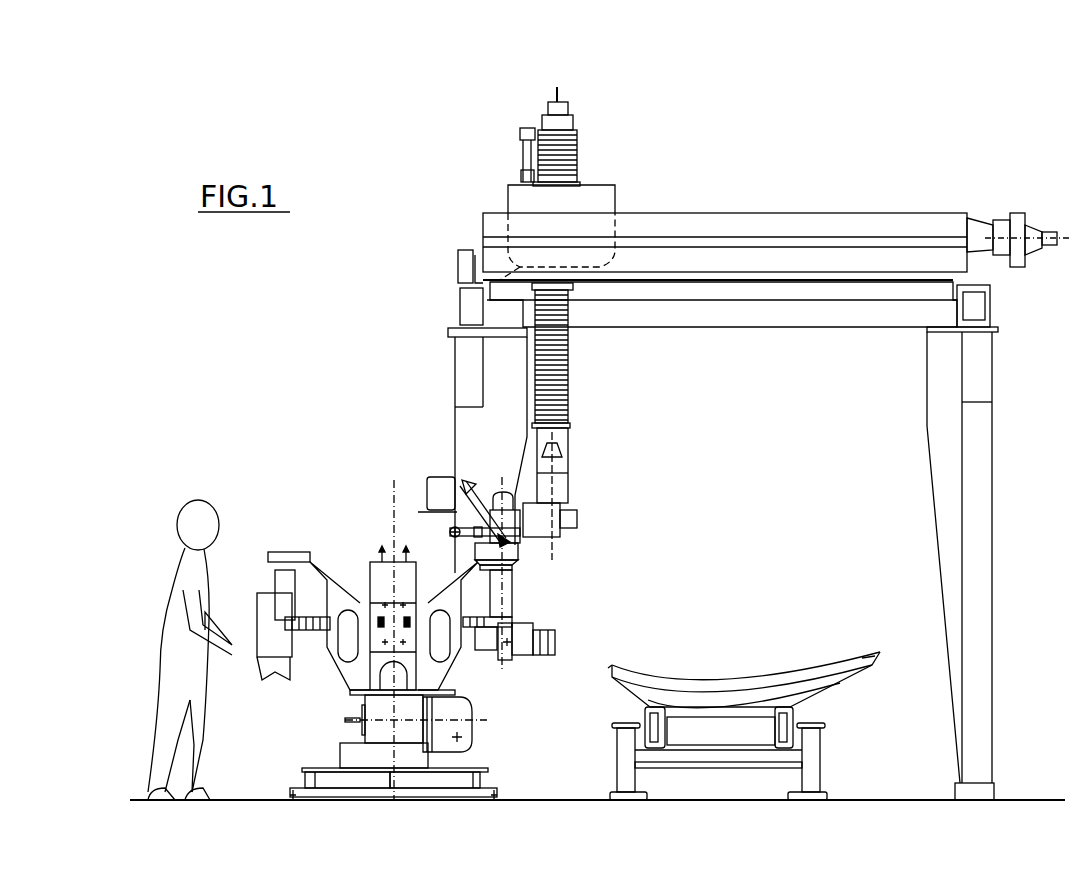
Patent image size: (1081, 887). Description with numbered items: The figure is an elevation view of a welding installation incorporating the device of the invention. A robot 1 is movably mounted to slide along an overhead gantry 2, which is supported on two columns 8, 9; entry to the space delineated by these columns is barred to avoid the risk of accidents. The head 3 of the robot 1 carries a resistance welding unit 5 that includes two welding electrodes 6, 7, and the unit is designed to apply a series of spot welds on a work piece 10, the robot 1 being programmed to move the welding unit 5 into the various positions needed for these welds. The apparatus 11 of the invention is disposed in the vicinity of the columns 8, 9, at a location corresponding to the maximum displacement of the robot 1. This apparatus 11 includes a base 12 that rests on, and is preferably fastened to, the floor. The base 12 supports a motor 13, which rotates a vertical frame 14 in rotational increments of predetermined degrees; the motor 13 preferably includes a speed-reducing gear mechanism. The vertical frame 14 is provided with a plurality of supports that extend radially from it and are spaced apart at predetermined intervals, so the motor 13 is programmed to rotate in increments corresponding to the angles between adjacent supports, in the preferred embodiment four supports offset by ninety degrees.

The robot 1 is at (598, 211).
The gantry 2 is at (893, 313).
The head 3 is at (577, 504).
The resistance welding unit 5 is at (508, 590).
The welding electrode 6 is at (553, 643).
The welding electrode 7 is at (555, 651).
The column 8 is at (934, 545).
The column 9 is at (464, 390).
The work piece 10 is at (730, 683).
The apparatus 11 is at (478, 757).
The base 12 is at (328, 782).
The motor 13 is at (455, 709).
The vertical frame 14 is at (378, 660).